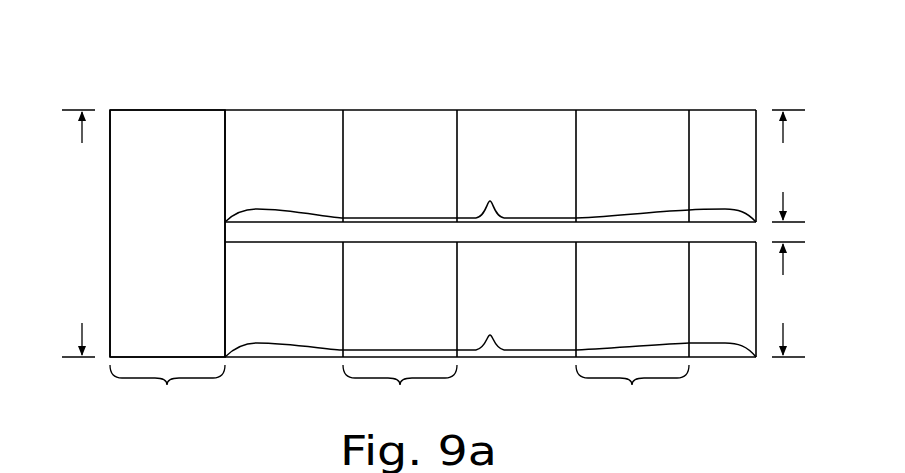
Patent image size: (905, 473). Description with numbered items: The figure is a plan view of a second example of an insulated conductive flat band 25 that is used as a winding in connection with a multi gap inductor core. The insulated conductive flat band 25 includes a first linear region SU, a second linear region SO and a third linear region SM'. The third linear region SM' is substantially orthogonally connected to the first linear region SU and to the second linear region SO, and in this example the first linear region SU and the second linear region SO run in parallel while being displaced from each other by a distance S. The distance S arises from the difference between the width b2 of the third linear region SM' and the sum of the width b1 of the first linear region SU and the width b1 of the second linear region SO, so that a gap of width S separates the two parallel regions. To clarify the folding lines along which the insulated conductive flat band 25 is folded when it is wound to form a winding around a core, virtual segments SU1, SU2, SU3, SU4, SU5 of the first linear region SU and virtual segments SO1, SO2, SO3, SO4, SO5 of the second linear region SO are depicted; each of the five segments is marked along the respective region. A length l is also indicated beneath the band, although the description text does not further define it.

The insulated conductive flat band 25 is at (759, 108).
The third linear region SM' is at (164, 206).
The second linear region SO is at (486, 192).
The first linear region SU is at (488, 324).
The virtual segment of the second linear region SO1 is at (277, 123).
The virtual segment of the second linear region SO2 is at (395, 123).
The virtual segment of the second linear region SO3 is at (509, 123).
The virtual segment of the second linear region SO4 is at (628, 123).
The virtual segment of the second linear region SO5 is at (742, 123).
The virtual segment of the first linear region SU1 is at (321, 263).
The virtual segment of the first linear region SU2 is at (441, 263).
The virtual segment of the first linear region SU3 is at (553, 263).
The virtual segment of the first linear region SU4 is at (672, 263).
The virtual segment of the first linear region SU5 is at (743, 343).
The width of the first and second linear regions b1 is at (792, 233).
The width of the third linear region b2 is at (76, 233).
The distance S is at (802, 244).
The section length l is at (399, 389).